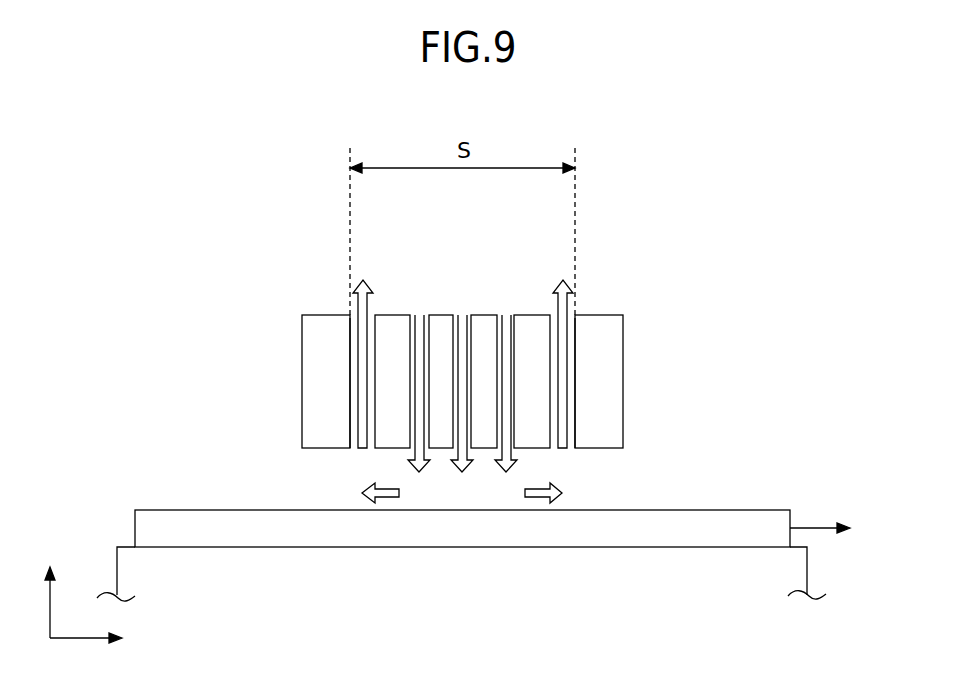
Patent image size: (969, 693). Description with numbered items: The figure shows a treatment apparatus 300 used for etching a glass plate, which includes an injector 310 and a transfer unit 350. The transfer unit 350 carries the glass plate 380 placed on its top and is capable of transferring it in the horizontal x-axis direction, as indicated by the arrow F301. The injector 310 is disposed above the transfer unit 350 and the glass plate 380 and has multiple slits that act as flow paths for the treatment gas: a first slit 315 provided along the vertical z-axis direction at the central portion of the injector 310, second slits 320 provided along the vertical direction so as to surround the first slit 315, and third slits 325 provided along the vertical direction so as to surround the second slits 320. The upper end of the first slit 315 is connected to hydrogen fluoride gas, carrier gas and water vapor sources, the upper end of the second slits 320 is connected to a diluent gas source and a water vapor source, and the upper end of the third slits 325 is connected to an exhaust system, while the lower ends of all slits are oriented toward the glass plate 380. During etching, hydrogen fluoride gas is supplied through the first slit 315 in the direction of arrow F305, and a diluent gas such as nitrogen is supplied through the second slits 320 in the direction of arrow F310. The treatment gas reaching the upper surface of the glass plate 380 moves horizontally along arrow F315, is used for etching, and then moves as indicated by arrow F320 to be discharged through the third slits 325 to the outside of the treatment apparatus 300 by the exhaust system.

The treatment apparatus 300 is at (722, 167).
The injector 310 is at (657, 321).
The first slit 315 is at (455, 315).
The second slits 320 is at (410, 315).
The third slits 325 is at (370, 318).
The transfer unit 350 is at (798, 572).
The glass plate 380 is at (740, 510).
The arrow F301 is at (815, 526).
The arrow F305 is at (462, 314).
The arrow F310 is at (419, 314).
The arrow F315 is at (387, 502).
The arrow F320 is at (355, 283).